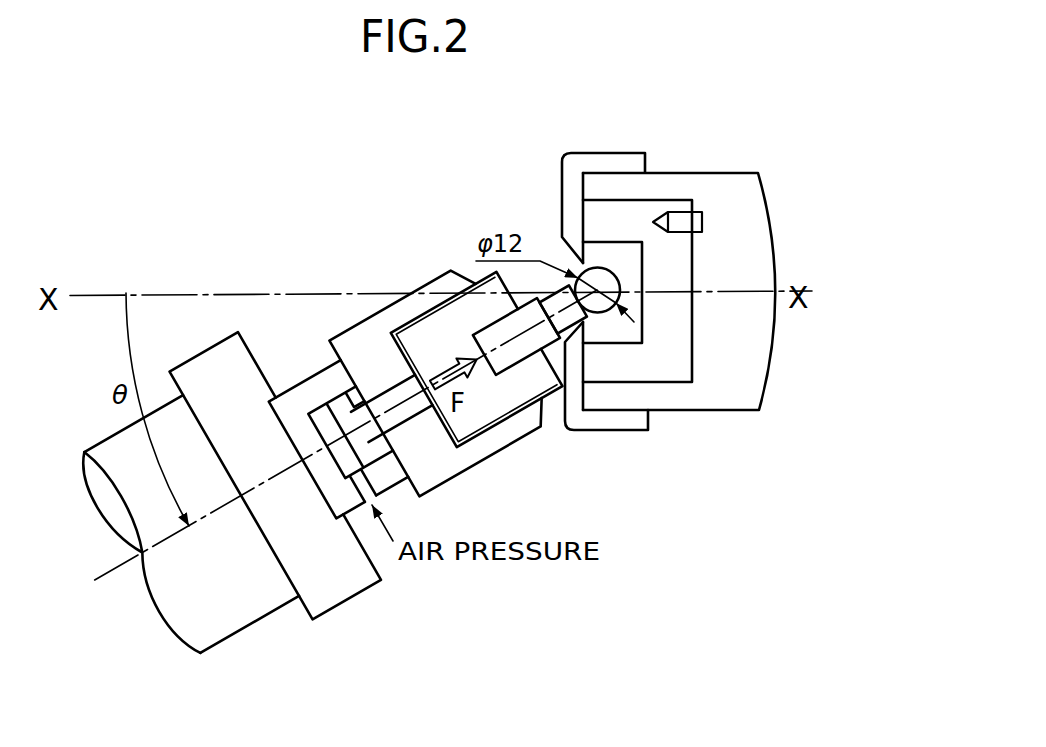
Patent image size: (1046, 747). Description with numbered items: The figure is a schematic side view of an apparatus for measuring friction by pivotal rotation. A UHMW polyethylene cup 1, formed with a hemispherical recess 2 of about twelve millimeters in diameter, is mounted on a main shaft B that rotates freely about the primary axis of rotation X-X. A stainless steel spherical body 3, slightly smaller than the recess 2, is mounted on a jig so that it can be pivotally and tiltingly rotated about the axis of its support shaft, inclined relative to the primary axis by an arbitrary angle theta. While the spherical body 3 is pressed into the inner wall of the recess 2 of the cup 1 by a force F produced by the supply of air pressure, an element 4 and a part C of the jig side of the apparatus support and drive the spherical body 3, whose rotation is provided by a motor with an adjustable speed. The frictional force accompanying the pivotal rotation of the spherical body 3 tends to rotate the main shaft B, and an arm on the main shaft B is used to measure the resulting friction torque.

The UHMW polyethylene cup 1 is at (625, 255).
The hemispherical recess 2 is at (602, 270).
The spherical body 3 is at (576, 266).
The air cylinder 4 is at (438, 335).
The main shaft B is at (738, 190).
The spindle C is at (173, 605).